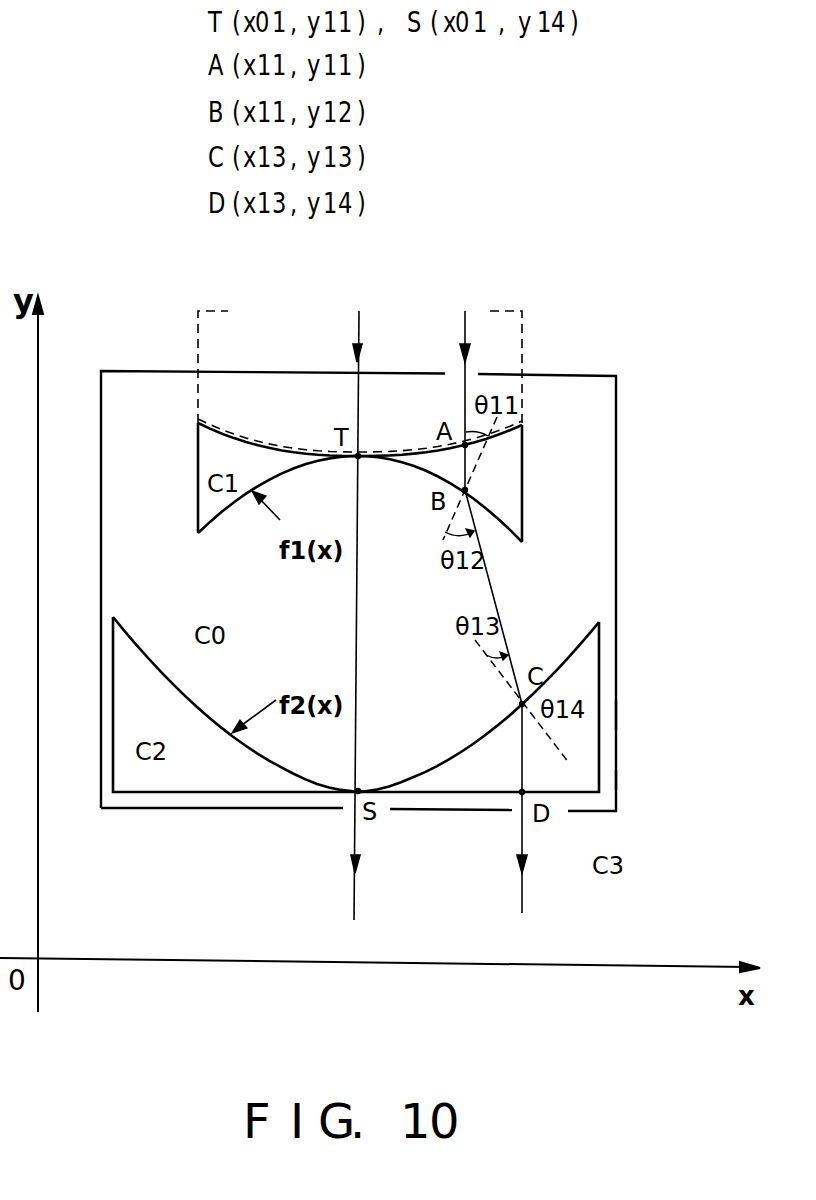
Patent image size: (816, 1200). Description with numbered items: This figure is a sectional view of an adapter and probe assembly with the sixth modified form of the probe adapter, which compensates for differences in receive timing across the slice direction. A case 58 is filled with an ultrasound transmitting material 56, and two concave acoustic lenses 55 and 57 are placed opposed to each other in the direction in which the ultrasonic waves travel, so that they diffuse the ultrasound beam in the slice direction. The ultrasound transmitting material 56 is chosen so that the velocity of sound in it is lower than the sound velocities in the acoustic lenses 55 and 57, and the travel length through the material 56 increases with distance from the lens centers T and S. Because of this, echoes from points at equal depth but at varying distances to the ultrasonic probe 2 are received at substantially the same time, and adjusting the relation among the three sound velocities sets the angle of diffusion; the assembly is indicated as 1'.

The ultrasonic probe 2 is at (522, 336).
The acoustic lens 55 is at (511, 474).
The ultrasound transmitting material 56 is at (592, 561).
The acoustic lens 57 is at (588, 677).
The case 58 is at (616, 712).
The optical unit housing 1' is at (648, 782).